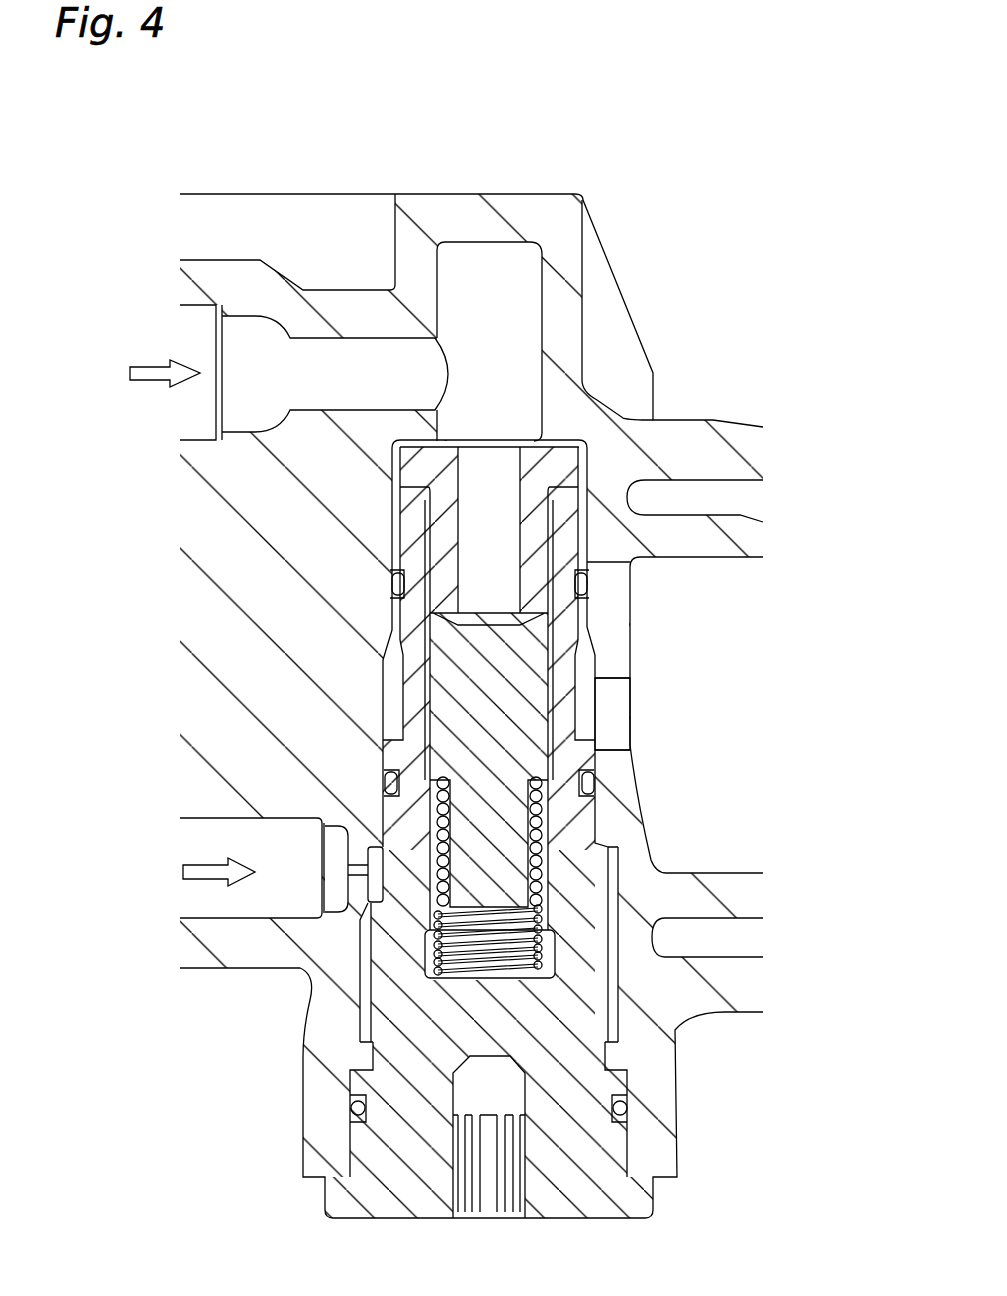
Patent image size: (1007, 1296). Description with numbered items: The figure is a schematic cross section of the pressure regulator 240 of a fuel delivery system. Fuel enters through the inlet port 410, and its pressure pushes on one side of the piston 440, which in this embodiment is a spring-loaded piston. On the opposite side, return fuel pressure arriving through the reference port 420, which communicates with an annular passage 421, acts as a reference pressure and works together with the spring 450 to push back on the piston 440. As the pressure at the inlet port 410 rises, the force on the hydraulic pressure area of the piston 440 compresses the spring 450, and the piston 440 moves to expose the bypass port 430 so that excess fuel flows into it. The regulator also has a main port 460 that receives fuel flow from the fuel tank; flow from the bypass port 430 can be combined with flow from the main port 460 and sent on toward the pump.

The pressure regulator 240 is at (742, 207).
The inlet port 410 is at (203, 335).
The reference port 420 is at (248, 847).
The annular passage 421 is at (380, 885).
The bypass port 430 is at (563, 658).
The piston 440 is at (447, 708).
The spring 450 is at (440, 820).
The main port 460 is at (617, 718).